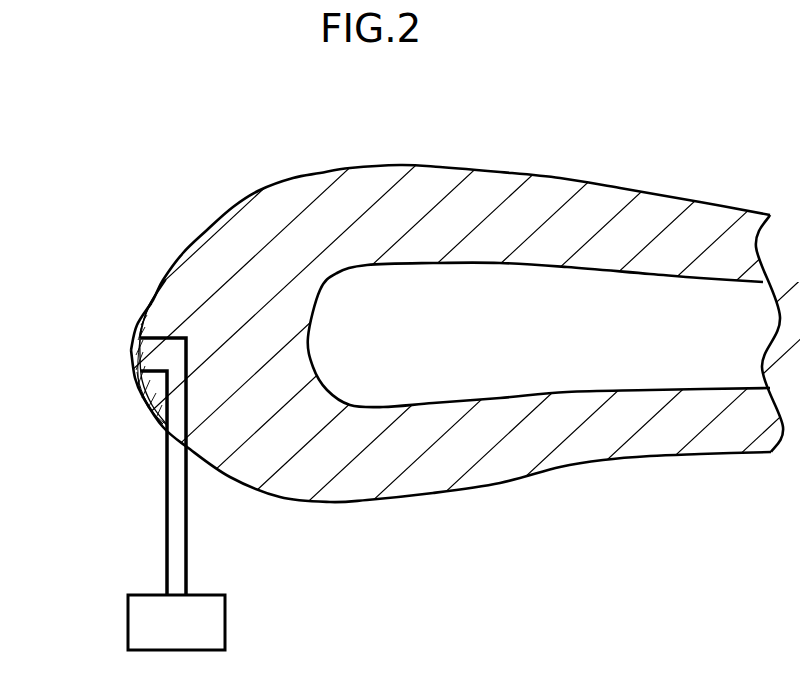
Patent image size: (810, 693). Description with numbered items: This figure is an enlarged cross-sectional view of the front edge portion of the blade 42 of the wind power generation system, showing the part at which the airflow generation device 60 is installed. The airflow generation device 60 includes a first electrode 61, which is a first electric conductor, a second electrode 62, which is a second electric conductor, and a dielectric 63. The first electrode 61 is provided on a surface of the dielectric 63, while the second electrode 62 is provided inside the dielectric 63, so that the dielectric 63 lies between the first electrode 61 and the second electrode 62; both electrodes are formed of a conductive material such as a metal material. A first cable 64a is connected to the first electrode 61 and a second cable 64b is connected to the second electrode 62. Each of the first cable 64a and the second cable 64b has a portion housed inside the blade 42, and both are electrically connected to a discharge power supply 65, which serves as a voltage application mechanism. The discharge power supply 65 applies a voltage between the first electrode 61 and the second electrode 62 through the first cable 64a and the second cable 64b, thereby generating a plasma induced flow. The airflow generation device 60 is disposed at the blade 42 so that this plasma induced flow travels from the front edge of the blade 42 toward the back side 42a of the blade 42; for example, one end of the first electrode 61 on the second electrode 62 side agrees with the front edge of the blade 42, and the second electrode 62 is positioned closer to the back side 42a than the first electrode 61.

The blade 42 is at (467, 124).
The back side of the blade 42a is at (557, 176).
The airflow generation device 60 is at (72, 317).
The first electrode 61 is at (134, 361).
The second electrode 62 is at (143, 320).
The dielectric 63 is at (143, 396).
The first cable 64a is at (165, 531).
The second cable 64b is at (188, 552).
The discharge power supply 65 is at (145, 624).